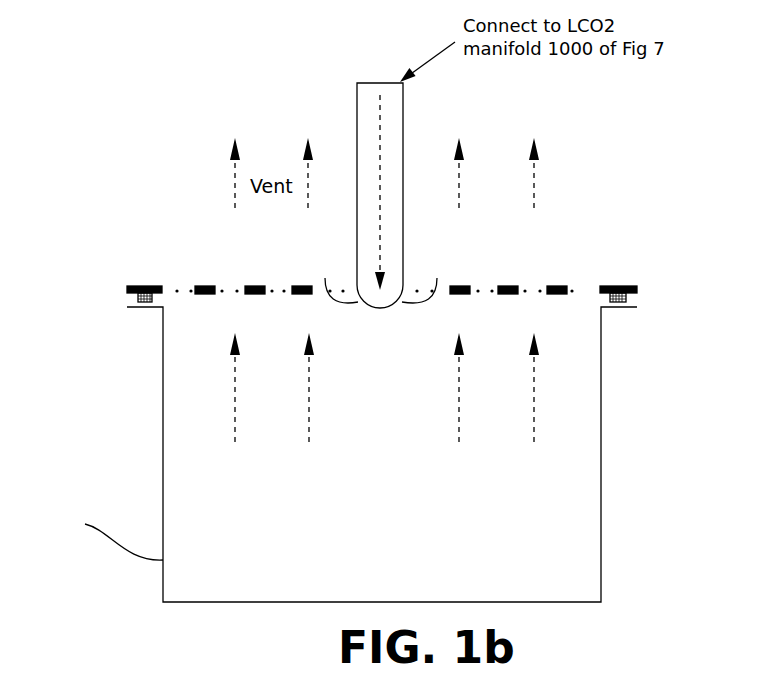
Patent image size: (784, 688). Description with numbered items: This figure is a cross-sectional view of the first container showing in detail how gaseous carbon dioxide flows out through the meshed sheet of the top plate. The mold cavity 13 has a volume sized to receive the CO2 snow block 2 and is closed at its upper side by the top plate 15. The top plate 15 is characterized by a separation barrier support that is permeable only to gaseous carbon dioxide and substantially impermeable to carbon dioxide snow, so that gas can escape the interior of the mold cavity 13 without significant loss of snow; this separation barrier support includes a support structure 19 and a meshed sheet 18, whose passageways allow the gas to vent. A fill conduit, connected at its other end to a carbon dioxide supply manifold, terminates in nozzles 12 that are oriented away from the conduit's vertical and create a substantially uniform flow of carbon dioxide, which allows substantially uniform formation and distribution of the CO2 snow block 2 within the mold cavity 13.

The CO2 snow block 2 is at (387, 491).
The nozzle 12 is at (375, 266).
The mold cavity 13 is at (622, 468).
The top plate 15 is at (563, 200).
The meshed sheet 18 is at (585, 293).
The support structure 19 is at (212, 285).